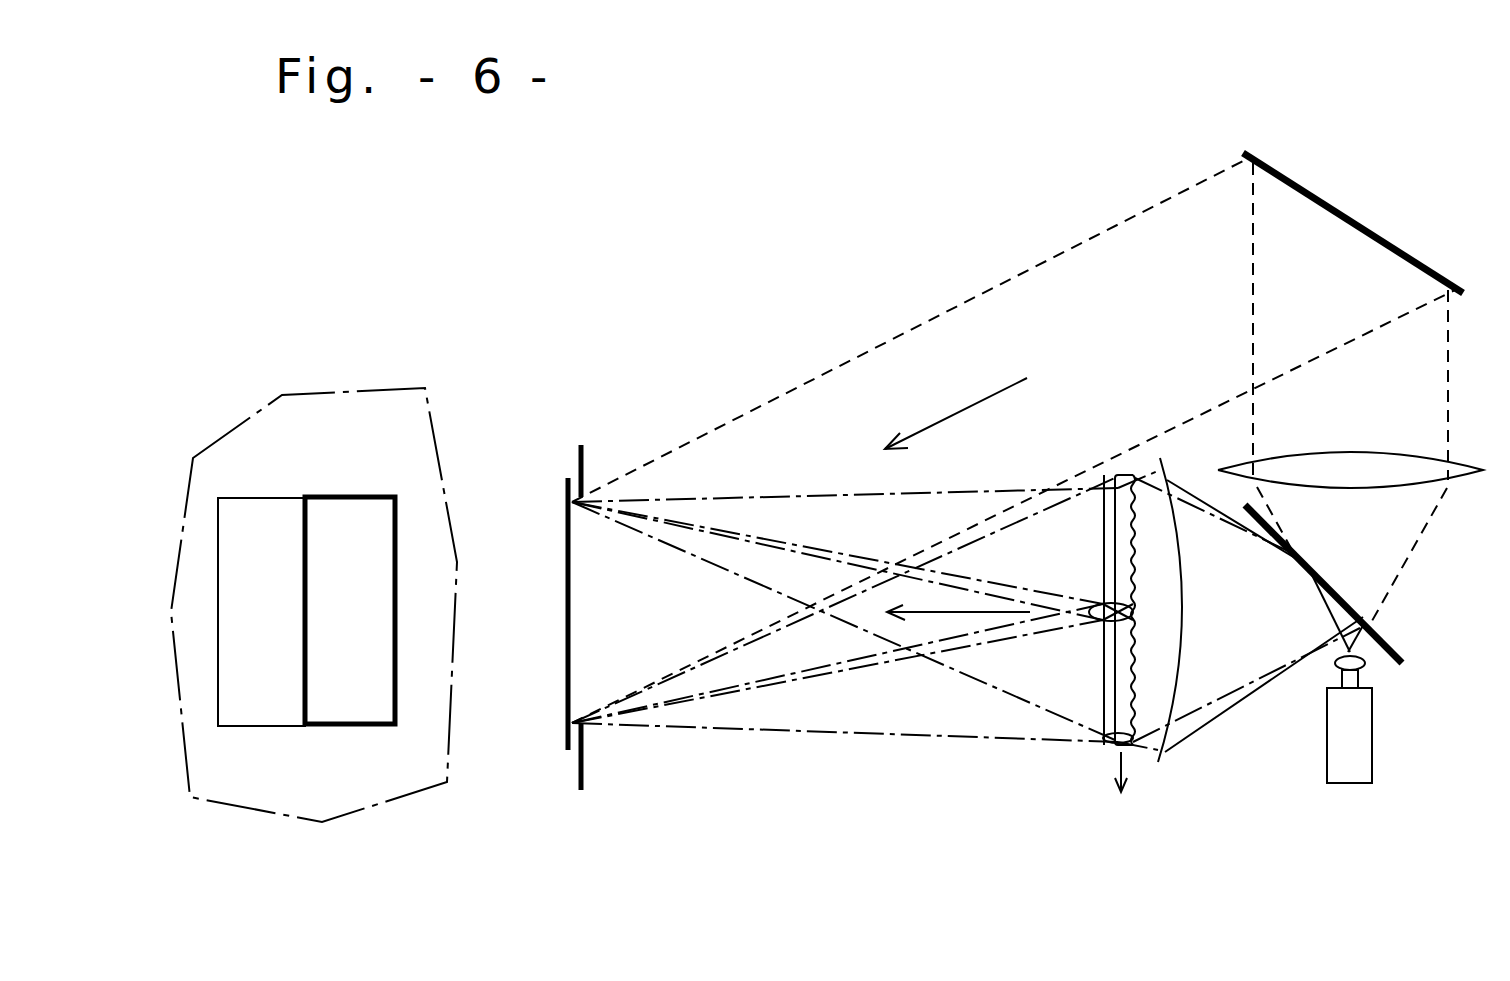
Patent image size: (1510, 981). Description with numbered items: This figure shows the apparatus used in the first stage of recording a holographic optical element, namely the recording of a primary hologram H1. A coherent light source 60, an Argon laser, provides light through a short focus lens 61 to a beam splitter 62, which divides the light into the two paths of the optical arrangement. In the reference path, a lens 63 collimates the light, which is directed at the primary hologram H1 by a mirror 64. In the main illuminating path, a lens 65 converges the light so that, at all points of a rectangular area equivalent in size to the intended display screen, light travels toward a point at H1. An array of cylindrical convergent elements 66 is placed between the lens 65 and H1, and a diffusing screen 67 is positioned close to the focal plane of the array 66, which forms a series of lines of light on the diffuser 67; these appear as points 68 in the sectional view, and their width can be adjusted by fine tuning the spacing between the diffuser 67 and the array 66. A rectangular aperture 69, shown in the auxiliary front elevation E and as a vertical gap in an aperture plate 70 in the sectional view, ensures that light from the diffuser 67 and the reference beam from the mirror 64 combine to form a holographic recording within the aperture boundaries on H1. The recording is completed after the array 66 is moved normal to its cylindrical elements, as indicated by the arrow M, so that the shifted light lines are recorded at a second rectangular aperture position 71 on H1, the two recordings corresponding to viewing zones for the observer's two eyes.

The coherent light source 60 is at (1332, 747).
The short focus lens 61 is at (1337, 672).
The beam splitter 62 is at (1368, 630).
The lens 63 is at (1243, 464).
The mirror 64 is at (1343, 218).
The lens 65 is at (1167, 715).
The array of cylindrical convergent elements 66 is at (1118, 722).
The diffusing screen 67 is at (1103, 695).
The points 68 is at (1103, 603).
The rectangular aperture 69 is at (348, 728).
The aperture plate 70 is at (583, 755).
The second rectangular aperture position 71 is at (265, 727).
The auxiliary front elevation E is at (252, 417).
The primary hologram H1 is at (567, 555).
The arrow M is at (1123, 768).